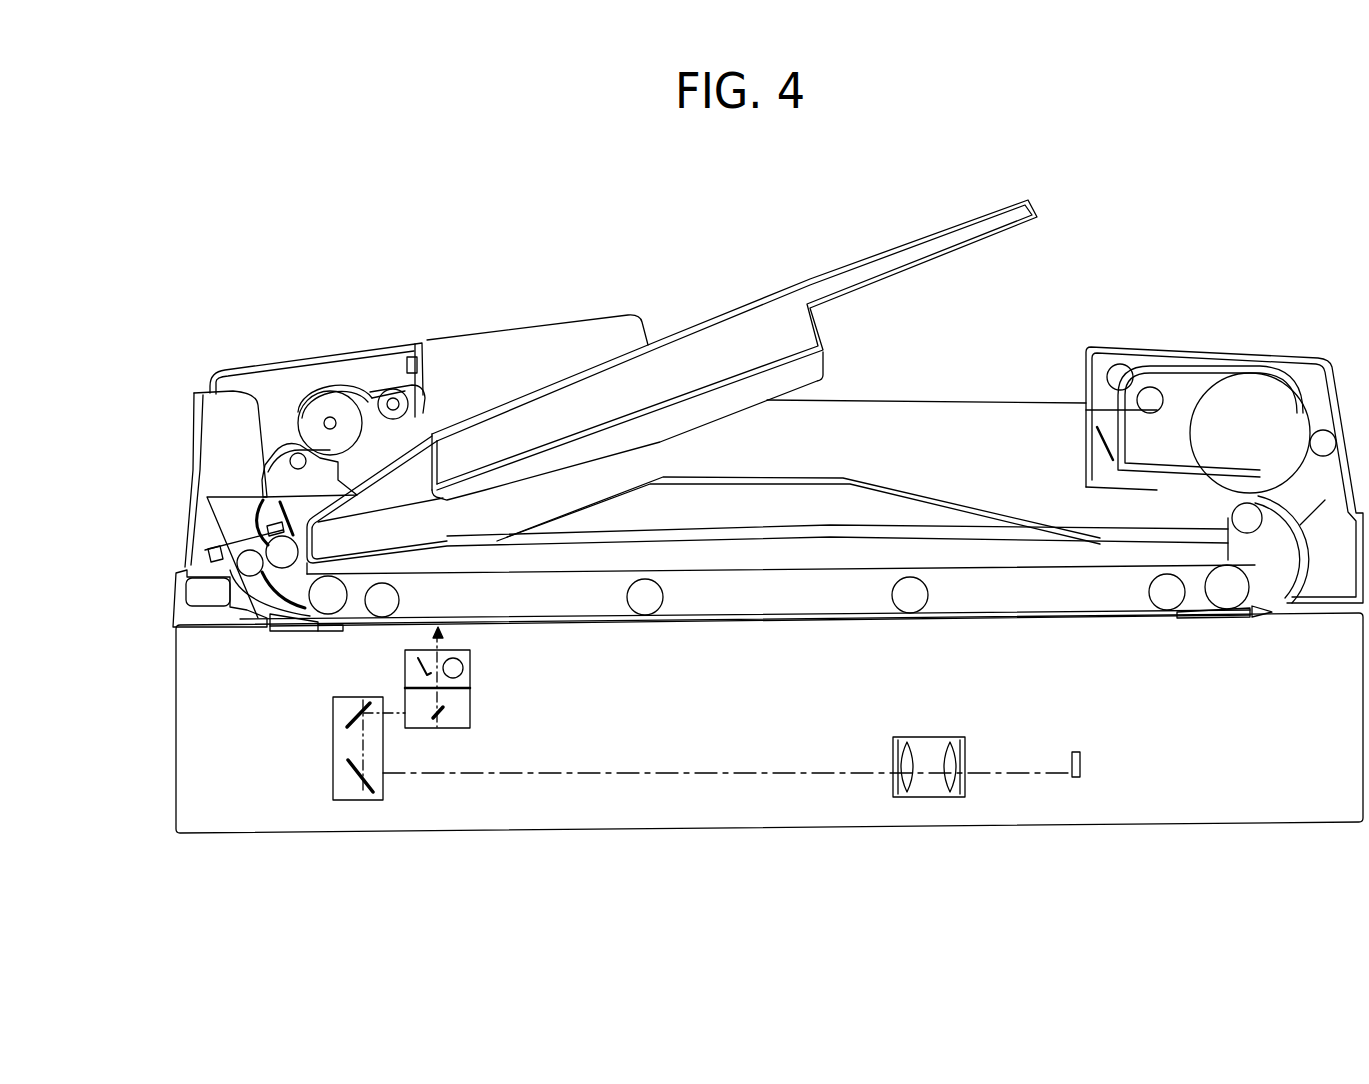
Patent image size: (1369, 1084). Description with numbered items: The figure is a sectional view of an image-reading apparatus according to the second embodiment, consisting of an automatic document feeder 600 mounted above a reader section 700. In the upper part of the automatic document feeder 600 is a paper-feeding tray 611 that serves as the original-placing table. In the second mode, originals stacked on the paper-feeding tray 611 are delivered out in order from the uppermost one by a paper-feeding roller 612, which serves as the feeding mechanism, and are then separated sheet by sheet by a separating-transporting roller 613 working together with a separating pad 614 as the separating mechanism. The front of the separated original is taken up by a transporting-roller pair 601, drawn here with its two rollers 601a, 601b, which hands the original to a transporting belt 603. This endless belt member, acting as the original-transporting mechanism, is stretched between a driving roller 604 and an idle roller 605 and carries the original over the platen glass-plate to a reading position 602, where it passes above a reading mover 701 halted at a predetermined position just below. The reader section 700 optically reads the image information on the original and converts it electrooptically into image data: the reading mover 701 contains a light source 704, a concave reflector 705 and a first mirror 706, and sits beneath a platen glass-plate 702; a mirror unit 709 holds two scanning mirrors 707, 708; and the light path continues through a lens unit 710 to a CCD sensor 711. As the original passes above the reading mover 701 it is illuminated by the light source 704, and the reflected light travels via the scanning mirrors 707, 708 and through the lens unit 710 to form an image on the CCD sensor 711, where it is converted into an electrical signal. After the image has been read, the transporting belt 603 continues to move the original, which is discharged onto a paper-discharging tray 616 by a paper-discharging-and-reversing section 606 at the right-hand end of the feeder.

The automatic document feeder 600 is at (1145, 312).
The transporting-roller pair 601 is at (100, 527).
The detection flag 601a is at (205, 550).
The detection sensor 601b is at (205, 583).
The reading position 602 is at (448, 630).
The transporting belt 603 is at (482, 568).
The driving roller 604 is at (352, 620).
The idle roller 605 is at (1210, 605).
The paper-discharging-and-reversing section 606 is at (1268, 347).
The paper-feeding tray 611 is at (838, 268).
The paper-feeding roller 612 is at (436, 410).
The separating-transporting roller 613 is at (352, 390).
The separating pad 614 is at (300, 412).
The paper-discharging tray 616 is at (928, 496).
The reader section 700 is at (1218, 823).
The reading mover 701 is at (472, 705).
The platen glass-plate 702 is at (1133, 622).
The light source 704 is at (463, 673).
The concave reflector 705 is at (418, 674).
The first mirror 706 is at (442, 727).
The scanning mirror 707 is at (347, 715).
The scanning mirror 708 is at (355, 782).
The mirror unit 709 is at (367, 803).
The lens unit 710 is at (923, 737).
The CCD sensor 711 is at (1082, 752).